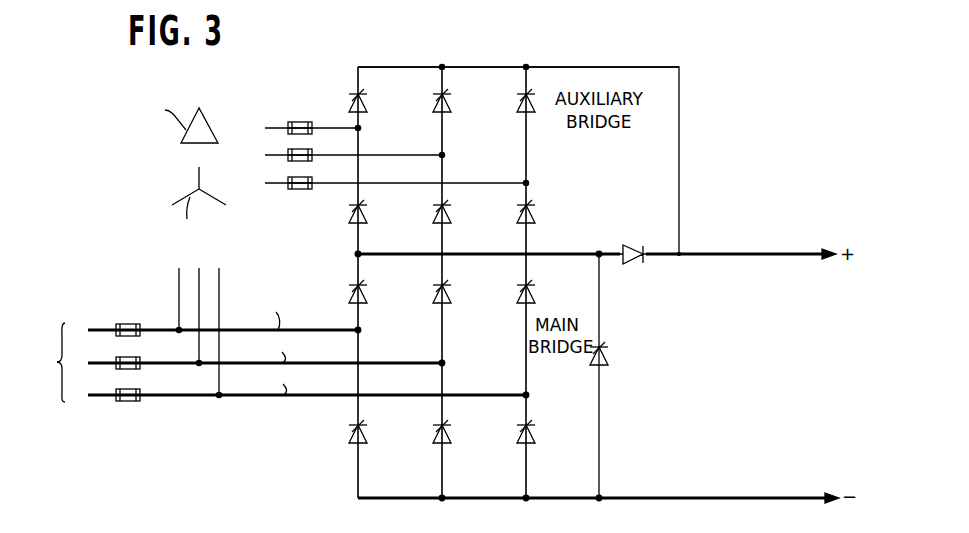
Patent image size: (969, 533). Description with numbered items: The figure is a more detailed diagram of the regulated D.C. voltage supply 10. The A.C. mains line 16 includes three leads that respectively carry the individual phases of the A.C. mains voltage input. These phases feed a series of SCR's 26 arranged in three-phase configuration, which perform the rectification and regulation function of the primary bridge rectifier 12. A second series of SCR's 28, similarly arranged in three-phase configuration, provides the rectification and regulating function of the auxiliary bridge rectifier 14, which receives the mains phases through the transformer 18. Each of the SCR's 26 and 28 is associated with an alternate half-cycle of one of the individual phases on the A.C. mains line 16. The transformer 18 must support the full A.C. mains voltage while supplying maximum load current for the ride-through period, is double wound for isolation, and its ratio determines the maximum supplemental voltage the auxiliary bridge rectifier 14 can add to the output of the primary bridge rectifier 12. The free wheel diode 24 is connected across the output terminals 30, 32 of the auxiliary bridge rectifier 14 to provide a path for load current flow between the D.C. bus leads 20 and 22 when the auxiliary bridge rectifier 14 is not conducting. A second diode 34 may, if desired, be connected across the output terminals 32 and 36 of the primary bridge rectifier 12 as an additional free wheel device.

The regulated D.C. voltage supply 10 is at (784, 104).
The primary bridge rectifier 12 is at (323, 452).
The auxiliary bridge rectifier 14 is at (336, 68).
The A.C. mains line 16 is at (282, 336).
The transformer 18 is at (166, 167).
The D.C. bus lead 20 is at (780, 254).
The D.C. bus lead 22 is at (784, 498).
The free wheel diode 24 is at (626, 265).
The SCR's 26 is at (433, 296).
The SCR's 28 is at (366, 103).
The output terminal 30 is at (679, 258).
The output terminal 32 is at (598, 253).
The second diode 34 is at (604, 366).
The output terminal 36 is at (606, 490).